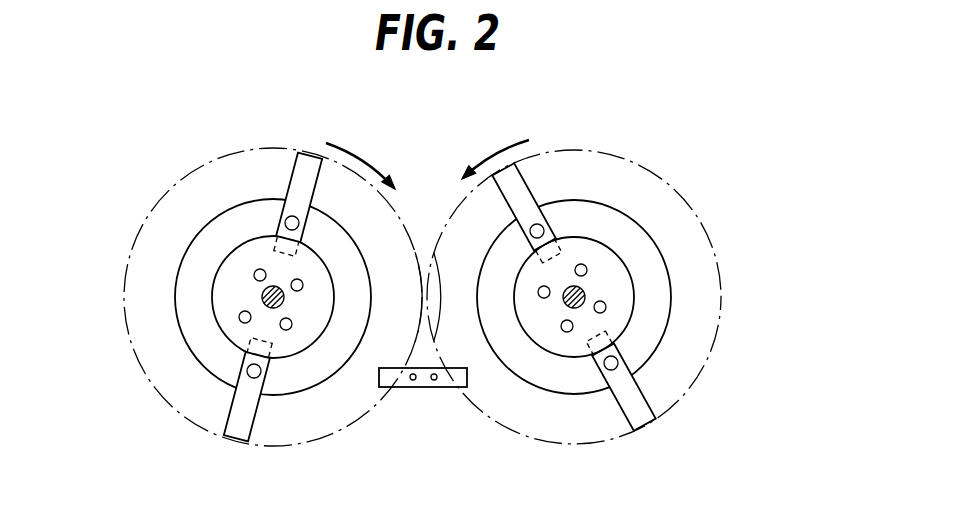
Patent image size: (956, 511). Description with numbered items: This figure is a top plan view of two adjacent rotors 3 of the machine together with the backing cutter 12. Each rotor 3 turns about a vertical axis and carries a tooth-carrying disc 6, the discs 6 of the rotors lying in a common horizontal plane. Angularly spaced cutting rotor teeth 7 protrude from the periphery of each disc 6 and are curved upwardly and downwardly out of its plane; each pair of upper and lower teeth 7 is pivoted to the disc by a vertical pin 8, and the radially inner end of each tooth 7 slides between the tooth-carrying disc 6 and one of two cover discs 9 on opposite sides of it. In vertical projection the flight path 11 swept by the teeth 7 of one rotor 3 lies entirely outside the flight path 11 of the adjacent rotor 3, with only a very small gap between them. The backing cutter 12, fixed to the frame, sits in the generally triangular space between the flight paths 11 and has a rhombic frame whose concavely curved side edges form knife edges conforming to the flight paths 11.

The rotor 3 is at (280, 138).
The tooth-carrying disc 6 is at (222, 242).
The cutting rotor tooth 7 is at (302, 180).
The vertical pin 8 is at (290, 224).
The cover disc 9 is at (235, 323).
The flight path 11 is at (182, 422).
The backing cutter 12 is at (393, 387).